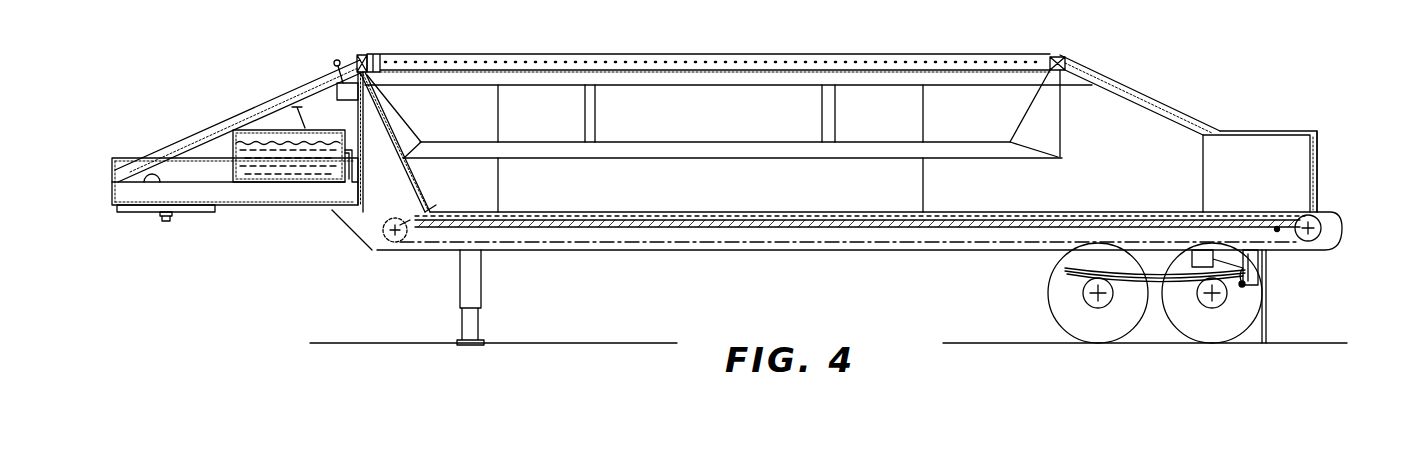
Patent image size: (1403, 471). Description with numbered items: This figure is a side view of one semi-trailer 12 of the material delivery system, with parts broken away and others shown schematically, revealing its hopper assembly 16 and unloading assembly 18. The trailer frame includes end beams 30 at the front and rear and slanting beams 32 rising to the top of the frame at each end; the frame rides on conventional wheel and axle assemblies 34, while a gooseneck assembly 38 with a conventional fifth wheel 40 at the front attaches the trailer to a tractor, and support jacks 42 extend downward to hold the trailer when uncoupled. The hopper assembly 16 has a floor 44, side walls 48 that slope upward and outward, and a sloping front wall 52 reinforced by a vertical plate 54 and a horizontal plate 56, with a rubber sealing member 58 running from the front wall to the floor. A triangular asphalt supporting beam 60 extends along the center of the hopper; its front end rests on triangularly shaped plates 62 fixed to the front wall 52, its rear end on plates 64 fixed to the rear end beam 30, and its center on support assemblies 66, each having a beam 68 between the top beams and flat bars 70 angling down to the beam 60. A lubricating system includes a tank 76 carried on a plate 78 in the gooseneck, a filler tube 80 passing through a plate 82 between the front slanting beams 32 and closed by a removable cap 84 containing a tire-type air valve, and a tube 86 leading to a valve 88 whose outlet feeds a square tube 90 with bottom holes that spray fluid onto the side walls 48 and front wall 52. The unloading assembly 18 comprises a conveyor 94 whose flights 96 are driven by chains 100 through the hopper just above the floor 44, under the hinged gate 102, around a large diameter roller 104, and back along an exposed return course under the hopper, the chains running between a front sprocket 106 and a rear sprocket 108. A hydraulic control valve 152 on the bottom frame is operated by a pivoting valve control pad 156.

The semi-trailer 12 is at (262, 58).
The hopper assembly 16 is at (782, 52).
The unloading assembly 18 is at (1093, 200).
The end beam 30 is at (361, 57).
The slanting beam 32 is at (1136, 90).
The wheel and axle assembly 34 is at (1208, 326).
The gooseneck assembly 38 is at (208, 215).
The fifth wheel 40 is at (168, 222).
The support jack 42 is at (481, 295).
The floor 44 is at (795, 220).
The side wall 48 is at (700, 100).
The front wall 52 is at (420, 187).
The plate 54 is at (362, 136).
The plate 56 is at (268, 205).
The rubber sealing member 58 is at (440, 207).
The asphalt supporting beam 60 is at (645, 158).
The triangularly shaped plate 62 is at (400, 133).
The plate 64 is at (1032, 117).
The support assembly 66 is at (582, 111).
The beam 68 is at (589, 82).
The flat bar 70 is at (596, 116).
The tank 76 is at (233, 165).
The plate 78 is at (148, 186).
The filler tube 80 is at (305, 128).
The plate 82 is at (192, 138).
The removable cap 84 is at (278, 95).
The tube 86 is at (362, 182).
The valve 88 is at (333, 90).
The square tube 90 is at (408, 54).
The conveyor 94 is at (702, 206).
The flight 96 is at (616, 214).
The chain 100 is at (386, 241).
The gate 102 is at (1322, 178).
The large diameter roller 104 is at (1320, 234).
The sprocket 106 is at (383, 223).
The sprocket 108 is at (404, 240).
The control valve 152 is at (1202, 252).
The valve control pad 156 is at (1260, 276).